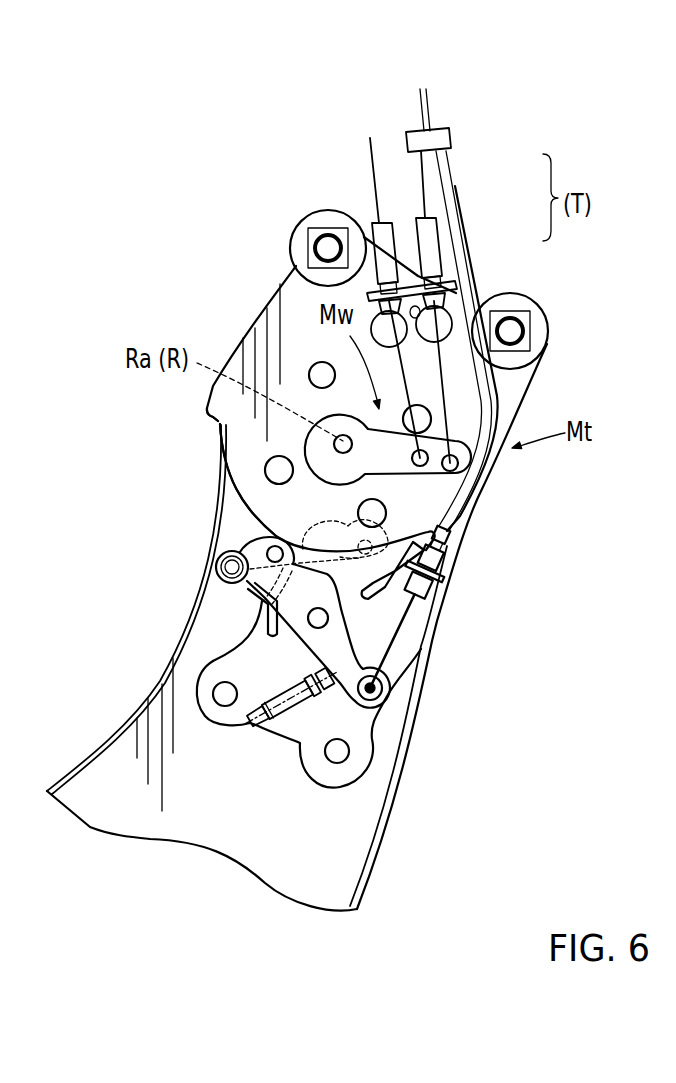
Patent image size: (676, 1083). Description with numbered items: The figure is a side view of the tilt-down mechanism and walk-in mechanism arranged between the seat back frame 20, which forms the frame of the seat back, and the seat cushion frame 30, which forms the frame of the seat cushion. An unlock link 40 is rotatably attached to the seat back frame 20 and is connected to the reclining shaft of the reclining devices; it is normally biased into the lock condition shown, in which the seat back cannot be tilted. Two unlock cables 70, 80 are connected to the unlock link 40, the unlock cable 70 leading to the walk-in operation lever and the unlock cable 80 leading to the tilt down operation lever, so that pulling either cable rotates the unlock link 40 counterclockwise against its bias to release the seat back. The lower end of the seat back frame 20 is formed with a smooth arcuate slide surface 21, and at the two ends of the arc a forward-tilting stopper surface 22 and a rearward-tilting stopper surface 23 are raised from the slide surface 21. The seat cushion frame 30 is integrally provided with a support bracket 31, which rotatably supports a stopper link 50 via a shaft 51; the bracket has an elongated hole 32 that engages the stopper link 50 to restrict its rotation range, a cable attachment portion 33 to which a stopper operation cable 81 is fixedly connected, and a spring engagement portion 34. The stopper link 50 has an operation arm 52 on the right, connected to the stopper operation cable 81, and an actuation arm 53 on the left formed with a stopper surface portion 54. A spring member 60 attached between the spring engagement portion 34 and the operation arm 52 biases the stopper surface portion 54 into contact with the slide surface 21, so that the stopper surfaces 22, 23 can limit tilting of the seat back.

The seat back frame 20 is at (260, 305).
The slide surface 21 is at (224, 484).
The forward-tilting stopper surface 22 is at (211, 421).
The rearward-tilting stopper surface 23 is at (450, 538).
The seat cushion frame 30 is at (288, 627).
The support bracket 31 is at (210, 686).
The elongated hole 32 is at (266, 625).
The cable attachment portion 33 is at (440, 578).
The spring engagement portion 34 is at (245, 728).
The unlock link 40 is at (317, 433).
The stopper link 50 is at (309, 616).
The shaft 51 is at (330, 613).
The operation arm 52 is at (390, 672).
The actuation arm 53 is at (252, 571).
The stopper surface portion 54 is at (268, 548).
The spring member 60 is at (292, 712).
The unlock cable 70 is at (372, 172).
The unlock cable 80 is at (423, 183).
The stopper operation cable 81 is at (450, 208).